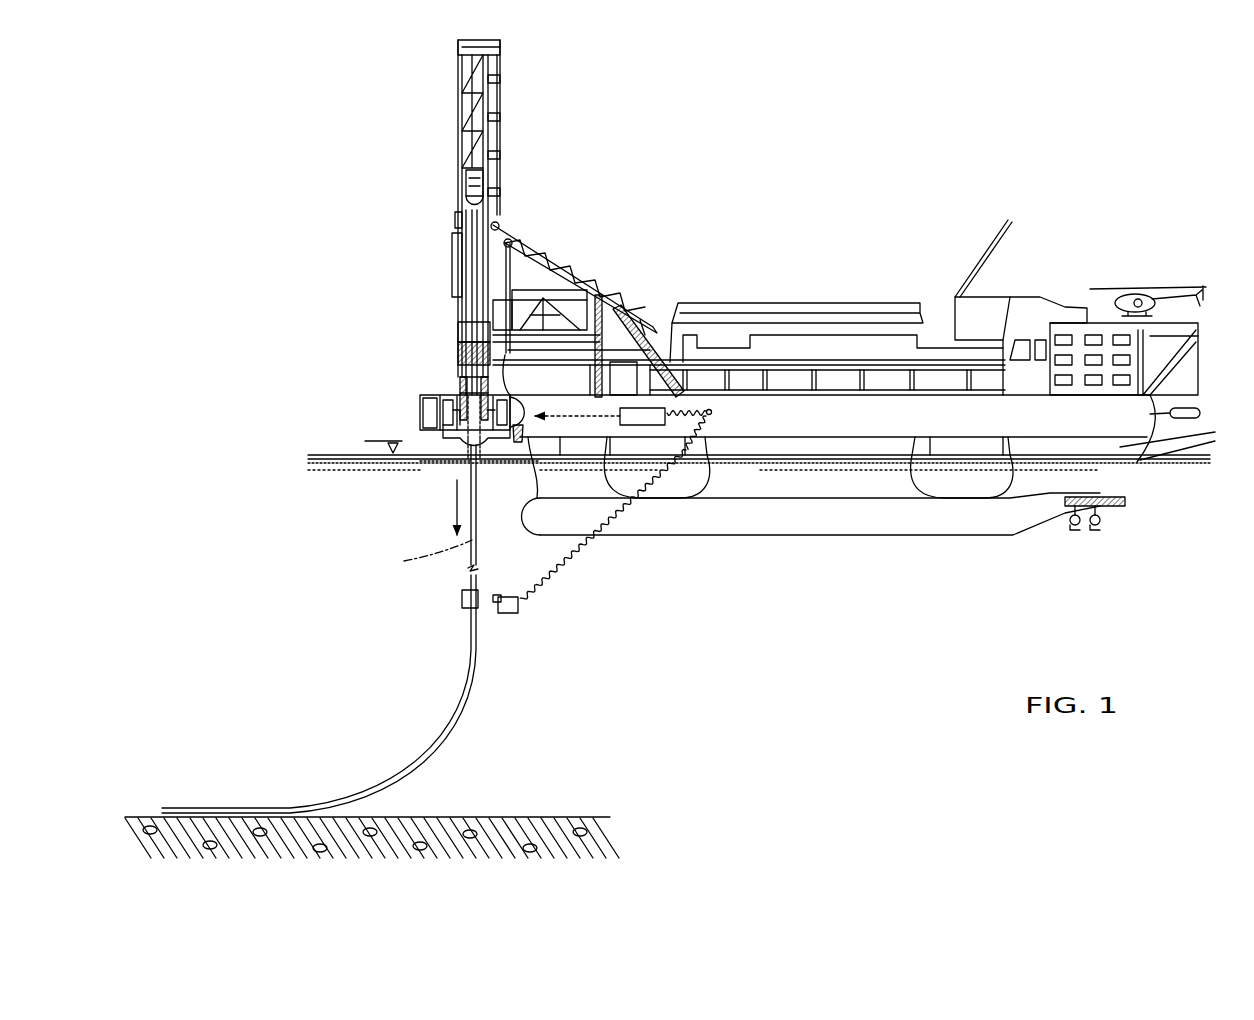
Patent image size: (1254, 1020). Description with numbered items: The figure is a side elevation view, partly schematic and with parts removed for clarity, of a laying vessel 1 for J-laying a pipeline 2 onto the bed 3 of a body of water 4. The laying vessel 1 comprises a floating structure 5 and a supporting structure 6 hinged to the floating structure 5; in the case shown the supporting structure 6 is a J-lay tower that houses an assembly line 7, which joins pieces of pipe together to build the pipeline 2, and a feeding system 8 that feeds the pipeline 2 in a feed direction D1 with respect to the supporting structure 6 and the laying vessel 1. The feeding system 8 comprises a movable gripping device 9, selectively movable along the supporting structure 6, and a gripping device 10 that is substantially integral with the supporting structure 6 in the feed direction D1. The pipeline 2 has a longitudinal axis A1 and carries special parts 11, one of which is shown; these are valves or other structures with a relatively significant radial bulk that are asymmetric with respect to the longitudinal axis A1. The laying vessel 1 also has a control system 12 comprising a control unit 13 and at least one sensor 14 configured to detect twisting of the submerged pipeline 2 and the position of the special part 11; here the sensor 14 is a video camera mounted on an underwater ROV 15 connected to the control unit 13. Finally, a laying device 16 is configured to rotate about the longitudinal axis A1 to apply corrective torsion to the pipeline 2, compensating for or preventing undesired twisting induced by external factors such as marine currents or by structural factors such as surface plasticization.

The laying vessel 1 is at (870, 230).
The pipeline 2 is at (453, 710).
The bed 3 is at (490, 840).
The body of water 4 is at (358, 505).
The floating structure 5 is at (1130, 448).
The supporting structure 6 is at (487, 183).
The assembly line 7 is at (436, 121).
The feeding system 8 is at (437, 382).
The movable gripping device 9 is at (462, 346).
The gripping device 10 is at (465, 422).
The special part 11 is at (463, 602).
The control system 12 is at (702, 547).
The control unit 13 is at (620, 410).
The sensor 14 is at (490, 585).
The underwater ROV 15 is at (517, 613).
The laying device 16 is at (412, 412).
The feed direction D1 is at (452, 515).
The longitudinal axis A1 is at (423, 556).